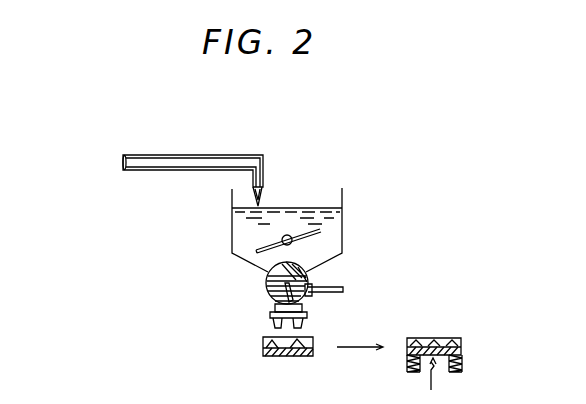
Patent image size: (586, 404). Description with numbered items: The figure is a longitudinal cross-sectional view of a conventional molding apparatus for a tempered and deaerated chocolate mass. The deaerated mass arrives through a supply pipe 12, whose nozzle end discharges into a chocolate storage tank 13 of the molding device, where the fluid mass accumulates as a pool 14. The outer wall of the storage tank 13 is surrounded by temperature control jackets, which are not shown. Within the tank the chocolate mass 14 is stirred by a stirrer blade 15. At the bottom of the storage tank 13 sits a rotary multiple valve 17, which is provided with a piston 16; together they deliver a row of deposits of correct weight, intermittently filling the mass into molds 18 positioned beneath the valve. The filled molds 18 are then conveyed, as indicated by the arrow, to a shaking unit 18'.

The supply pipe 12 is at (163, 153).
The chocolate storage tank 13 is at (231, 196).
The pool 14 is at (315, 212).
The stirrer blade 15 is at (320, 232).
The piston 16 is at (343, 287).
The rotary multiple valve 17 is at (267, 281).
The molds 18 is at (307, 362).
The shaking unit 18' is at (465, 372).